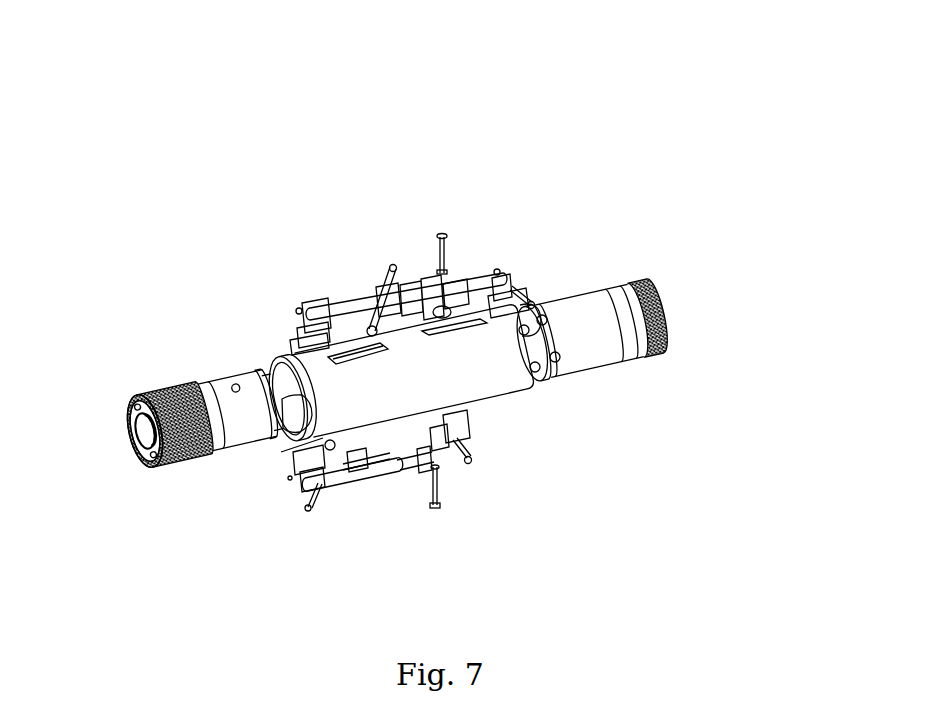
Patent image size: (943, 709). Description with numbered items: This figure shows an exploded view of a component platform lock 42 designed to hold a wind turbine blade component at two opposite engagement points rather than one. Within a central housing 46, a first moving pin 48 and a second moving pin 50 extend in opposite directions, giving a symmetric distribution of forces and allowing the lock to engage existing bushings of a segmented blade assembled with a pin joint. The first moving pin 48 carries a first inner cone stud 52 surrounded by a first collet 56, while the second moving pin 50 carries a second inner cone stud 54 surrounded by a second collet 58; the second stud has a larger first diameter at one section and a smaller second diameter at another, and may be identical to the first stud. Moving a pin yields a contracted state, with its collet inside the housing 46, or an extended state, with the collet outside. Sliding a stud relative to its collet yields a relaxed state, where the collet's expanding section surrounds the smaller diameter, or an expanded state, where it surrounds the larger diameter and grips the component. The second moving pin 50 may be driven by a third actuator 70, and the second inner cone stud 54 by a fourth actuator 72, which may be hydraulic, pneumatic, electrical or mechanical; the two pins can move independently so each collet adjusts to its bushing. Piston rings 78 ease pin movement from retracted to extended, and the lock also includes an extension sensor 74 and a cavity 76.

The component platform lock 42 is at (435, 306).
The housing 46 is at (289, 338).
The first moving pin 48 is at (181, 342).
The second moving pin 50 is at (553, 272).
The first inner cone stud 52 is at (192, 470).
The second inner cone stud 54 is at (635, 365).
The first collet 56 is at (124, 394).
The second collet 58 is at (672, 345).
The third actuator 70 is at (338, 290).
The fourth actuator 72 is at (470, 265).
The extension sensor 74 is at (355, 497).
The cavity 76 is at (470, 442).
The piston rings 78 is at (247, 368).